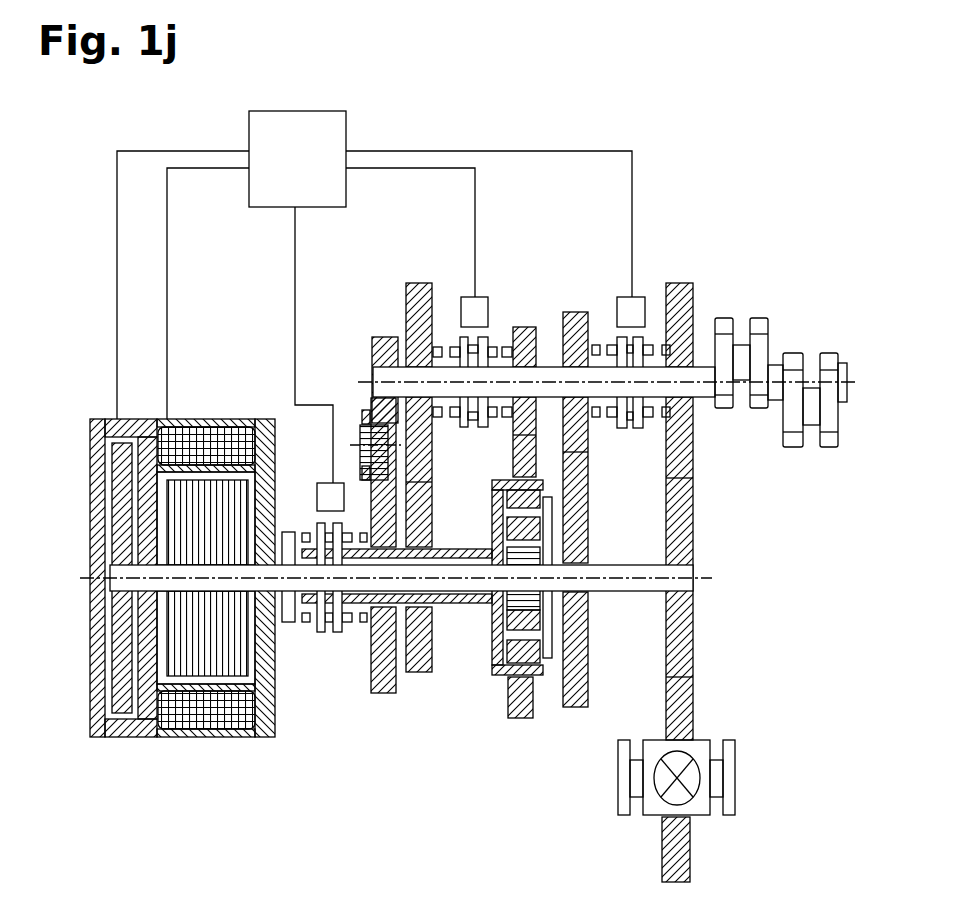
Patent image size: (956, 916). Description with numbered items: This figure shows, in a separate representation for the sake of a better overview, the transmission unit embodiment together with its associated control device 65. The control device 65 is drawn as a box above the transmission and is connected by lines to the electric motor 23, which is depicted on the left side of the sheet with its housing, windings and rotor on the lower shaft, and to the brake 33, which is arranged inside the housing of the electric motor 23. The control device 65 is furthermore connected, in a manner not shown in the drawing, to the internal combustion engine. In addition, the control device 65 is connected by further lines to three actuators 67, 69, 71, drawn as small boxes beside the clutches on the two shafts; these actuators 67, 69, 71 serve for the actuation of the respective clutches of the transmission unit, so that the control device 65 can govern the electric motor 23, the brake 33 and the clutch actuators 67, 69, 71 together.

The electric motor 23 is at (146, 578).
The brake 33 is at (113, 665).
The control device 65 is at (310, 172).
The actuator 67 is at (489, 308).
The actuator 69 is at (614, 308).
The actuator 71 is at (317, 497).